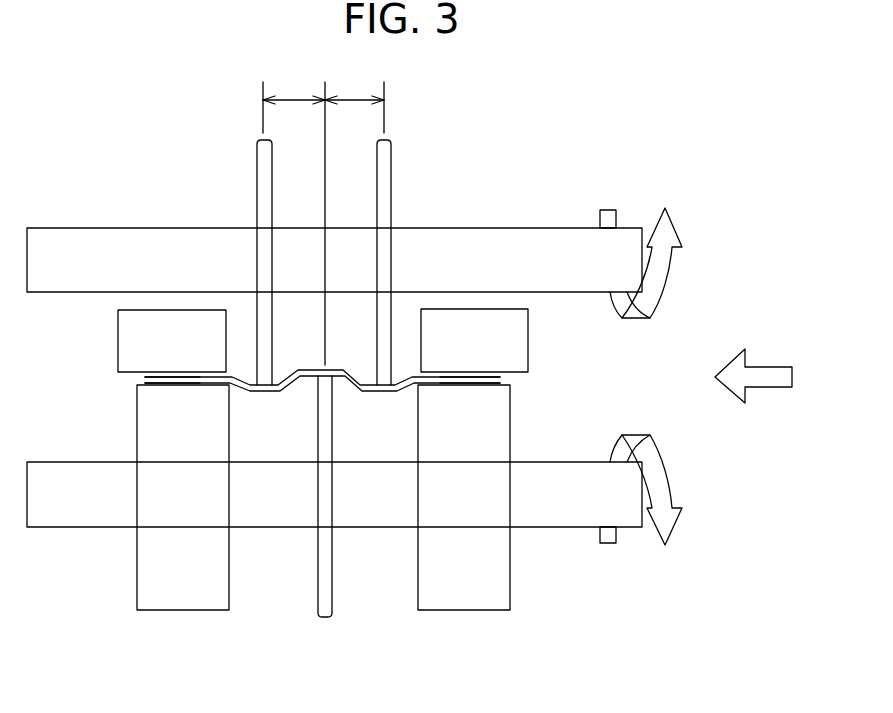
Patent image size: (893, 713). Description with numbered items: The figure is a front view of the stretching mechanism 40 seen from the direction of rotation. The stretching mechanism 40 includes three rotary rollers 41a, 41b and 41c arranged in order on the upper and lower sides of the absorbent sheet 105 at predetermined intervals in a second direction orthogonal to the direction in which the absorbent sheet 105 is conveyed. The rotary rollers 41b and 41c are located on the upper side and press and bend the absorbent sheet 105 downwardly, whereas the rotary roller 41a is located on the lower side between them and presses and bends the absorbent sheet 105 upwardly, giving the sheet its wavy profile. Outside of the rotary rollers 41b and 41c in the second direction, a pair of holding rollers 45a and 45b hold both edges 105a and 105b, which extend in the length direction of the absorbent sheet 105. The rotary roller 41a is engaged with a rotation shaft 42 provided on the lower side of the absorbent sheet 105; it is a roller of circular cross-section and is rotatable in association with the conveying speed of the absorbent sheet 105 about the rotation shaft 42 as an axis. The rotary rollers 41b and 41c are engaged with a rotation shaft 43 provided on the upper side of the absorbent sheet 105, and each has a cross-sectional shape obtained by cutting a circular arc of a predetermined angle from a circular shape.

The stretching mechanism 40 is at (682, 148).
The rotary roller 41a is at (325, 617).
The rotary roller 41b is at (257, 163).
The rotary roller 41c is at (392, 162).
The rotation shaft 42 is at (53, 527).
The rotation shaft 43 is at (78, 228).
The holding roller 45a is at (118, 327).
The holding roller 45b is at (528, 343).
The absorbent sheet 105 is at (330, 414).
The edge 105a is at (145, 380).
The edge 105b is at (500, 380).